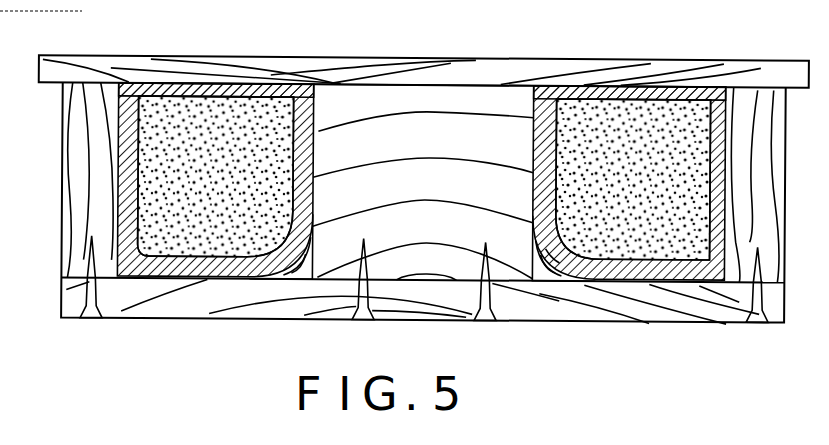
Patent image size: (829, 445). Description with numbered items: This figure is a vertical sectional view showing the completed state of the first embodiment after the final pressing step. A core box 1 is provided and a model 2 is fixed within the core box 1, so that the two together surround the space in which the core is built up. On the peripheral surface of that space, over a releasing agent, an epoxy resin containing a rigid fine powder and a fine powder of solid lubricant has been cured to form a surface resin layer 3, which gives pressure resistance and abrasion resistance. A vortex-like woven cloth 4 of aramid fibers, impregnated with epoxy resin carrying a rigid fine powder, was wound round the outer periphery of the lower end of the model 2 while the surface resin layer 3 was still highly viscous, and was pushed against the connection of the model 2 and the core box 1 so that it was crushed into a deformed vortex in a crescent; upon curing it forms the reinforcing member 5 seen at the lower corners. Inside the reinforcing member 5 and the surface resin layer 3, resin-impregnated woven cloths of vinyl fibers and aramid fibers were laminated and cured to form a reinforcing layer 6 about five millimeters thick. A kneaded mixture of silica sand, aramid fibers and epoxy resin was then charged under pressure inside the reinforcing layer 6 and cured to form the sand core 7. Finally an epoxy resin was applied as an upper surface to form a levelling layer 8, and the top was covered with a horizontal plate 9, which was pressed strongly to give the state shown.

The core box 1 is at (757, 102).
The model 2 is at (467, 97).
The surface resin layer 3 is at (700, 282).
The vortex-like woven cloth 4 is at (424, 279).
The reinforcing member 5 is at (584, 266).
The reinforcing layer 6 is at (648, 270).
The sand core 7 is at (664, 110).
The levelling layer 8 is at (630, 95).
The horizontal plate 9 is at (565, 76).